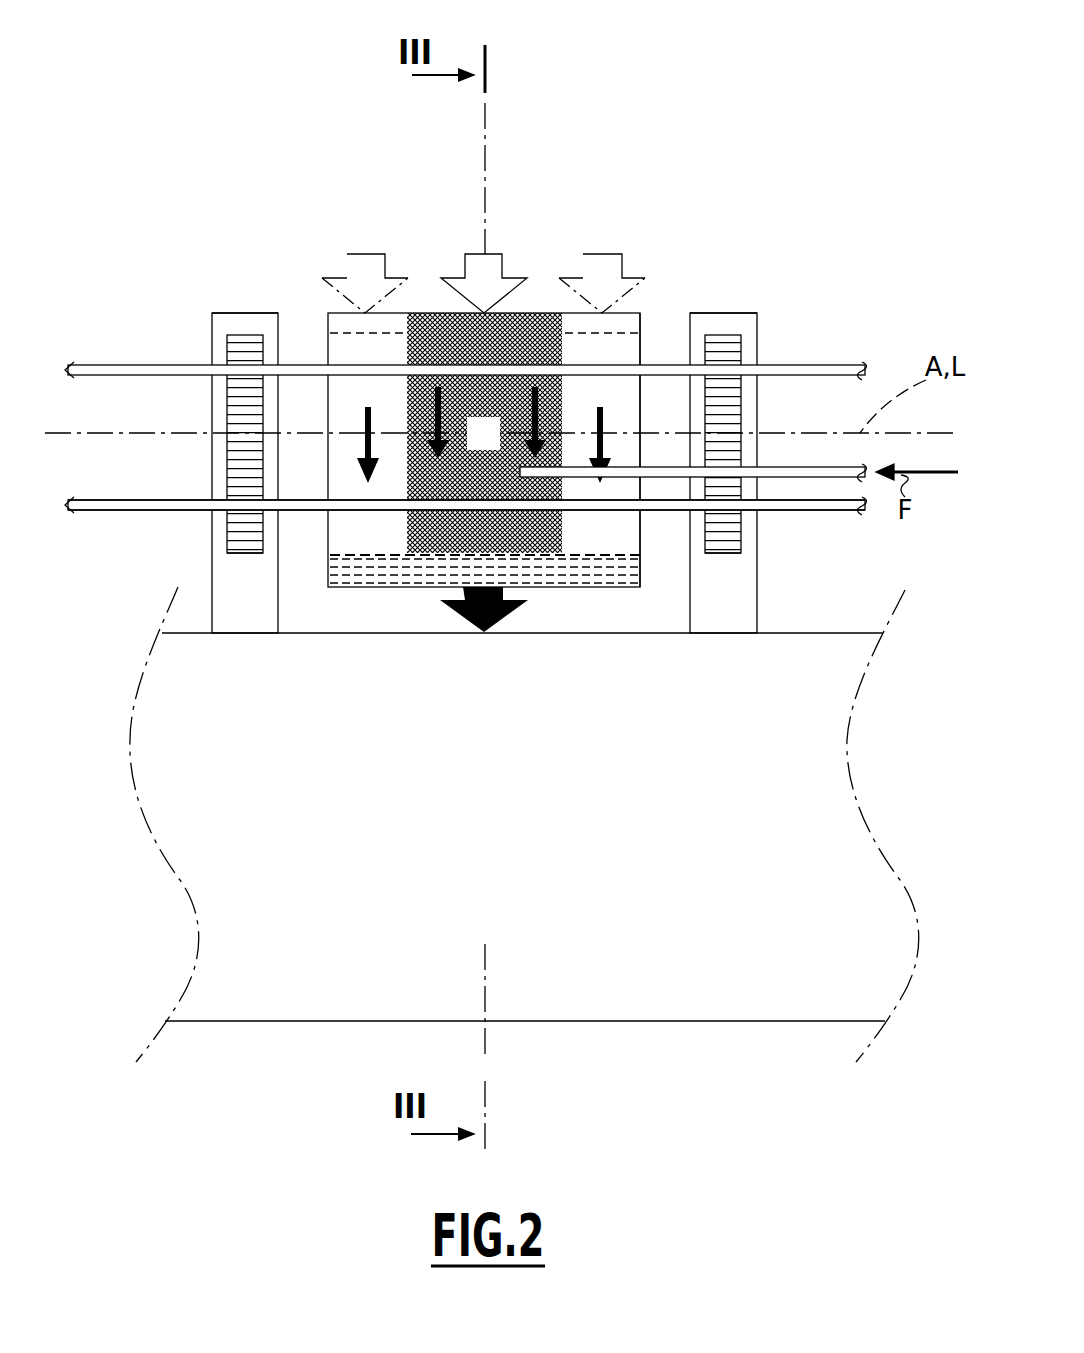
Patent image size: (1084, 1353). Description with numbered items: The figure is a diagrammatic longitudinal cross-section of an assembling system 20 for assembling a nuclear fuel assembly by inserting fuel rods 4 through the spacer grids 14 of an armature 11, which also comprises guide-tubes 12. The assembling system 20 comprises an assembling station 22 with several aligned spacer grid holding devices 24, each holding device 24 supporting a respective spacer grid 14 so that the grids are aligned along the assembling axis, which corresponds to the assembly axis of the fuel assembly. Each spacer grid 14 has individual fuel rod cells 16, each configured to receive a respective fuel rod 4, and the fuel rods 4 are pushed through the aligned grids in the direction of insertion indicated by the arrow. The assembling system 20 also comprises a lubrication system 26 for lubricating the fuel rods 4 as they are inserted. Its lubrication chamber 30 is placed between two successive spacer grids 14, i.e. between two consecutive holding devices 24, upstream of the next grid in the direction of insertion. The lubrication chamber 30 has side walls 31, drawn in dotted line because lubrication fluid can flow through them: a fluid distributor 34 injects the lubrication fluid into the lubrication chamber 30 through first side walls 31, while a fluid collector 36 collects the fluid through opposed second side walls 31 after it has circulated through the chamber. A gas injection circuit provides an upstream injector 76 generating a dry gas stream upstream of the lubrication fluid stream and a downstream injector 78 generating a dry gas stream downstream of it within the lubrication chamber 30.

The fuel rod 4 is at (92, 370).
The armature 11 is at (128, 528).
The guide-tube 12 is at (137, 505).
The spacer grid 14 is at (245, 553).
The fuel rod cell 16 is at (228, 345).
The assembling system 20 is at (248, 170).
The assembling station 22 is at (424, 266).
The spacer grid holding device 24 is at (255, 313).
The lubrication system 26 is at (652, 292).
The lubrication chamber 30 is at (483, 433).
The side wall 31 is at (385, 320).
The fluid distributor 34 is at (546, 318).
The fluid collector 36 is at (598, 575).
The upstream injector 76 is at (645, 325).
The downstream injector 78 is at (322, 322).